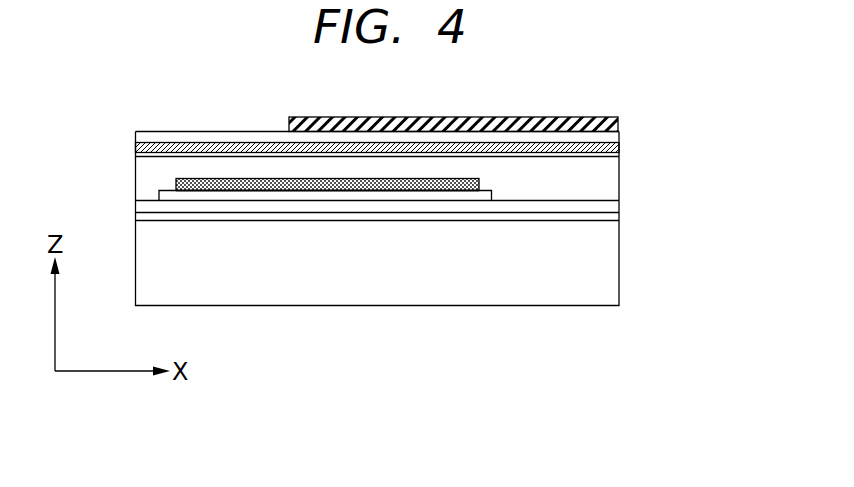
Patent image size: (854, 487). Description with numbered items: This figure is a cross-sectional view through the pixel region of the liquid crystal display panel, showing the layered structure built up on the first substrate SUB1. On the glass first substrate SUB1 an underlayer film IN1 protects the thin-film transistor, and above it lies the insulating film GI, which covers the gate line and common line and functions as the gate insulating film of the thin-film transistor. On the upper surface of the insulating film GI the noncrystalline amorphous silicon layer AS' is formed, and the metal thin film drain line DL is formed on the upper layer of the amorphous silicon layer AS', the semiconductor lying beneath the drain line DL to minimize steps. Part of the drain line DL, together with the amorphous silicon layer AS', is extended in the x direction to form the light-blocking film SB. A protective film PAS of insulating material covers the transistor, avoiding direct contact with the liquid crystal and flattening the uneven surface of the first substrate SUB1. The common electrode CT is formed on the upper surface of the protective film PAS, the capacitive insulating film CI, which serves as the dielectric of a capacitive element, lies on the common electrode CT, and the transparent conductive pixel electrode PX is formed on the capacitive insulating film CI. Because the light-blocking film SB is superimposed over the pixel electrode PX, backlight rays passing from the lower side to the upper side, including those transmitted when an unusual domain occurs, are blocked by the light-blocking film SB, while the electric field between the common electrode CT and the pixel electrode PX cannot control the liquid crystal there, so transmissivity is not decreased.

The pixel electrode PX is at (534, 118).
The capacitive insulating film CI is at (615, 133).
The common electrode CT is at (615, 146).
The protective film PAS is at (615, 178).
The insulating film GI is at (615, 206).
The insulating film IN1 is at (615, 215).
The first substrate SUB1 is at (615, 276).
The drain line DL is at (242, 191).
The light-blocking film SB is at (369, 191).
The amorphous silicon layer AS' is at (325, 280).